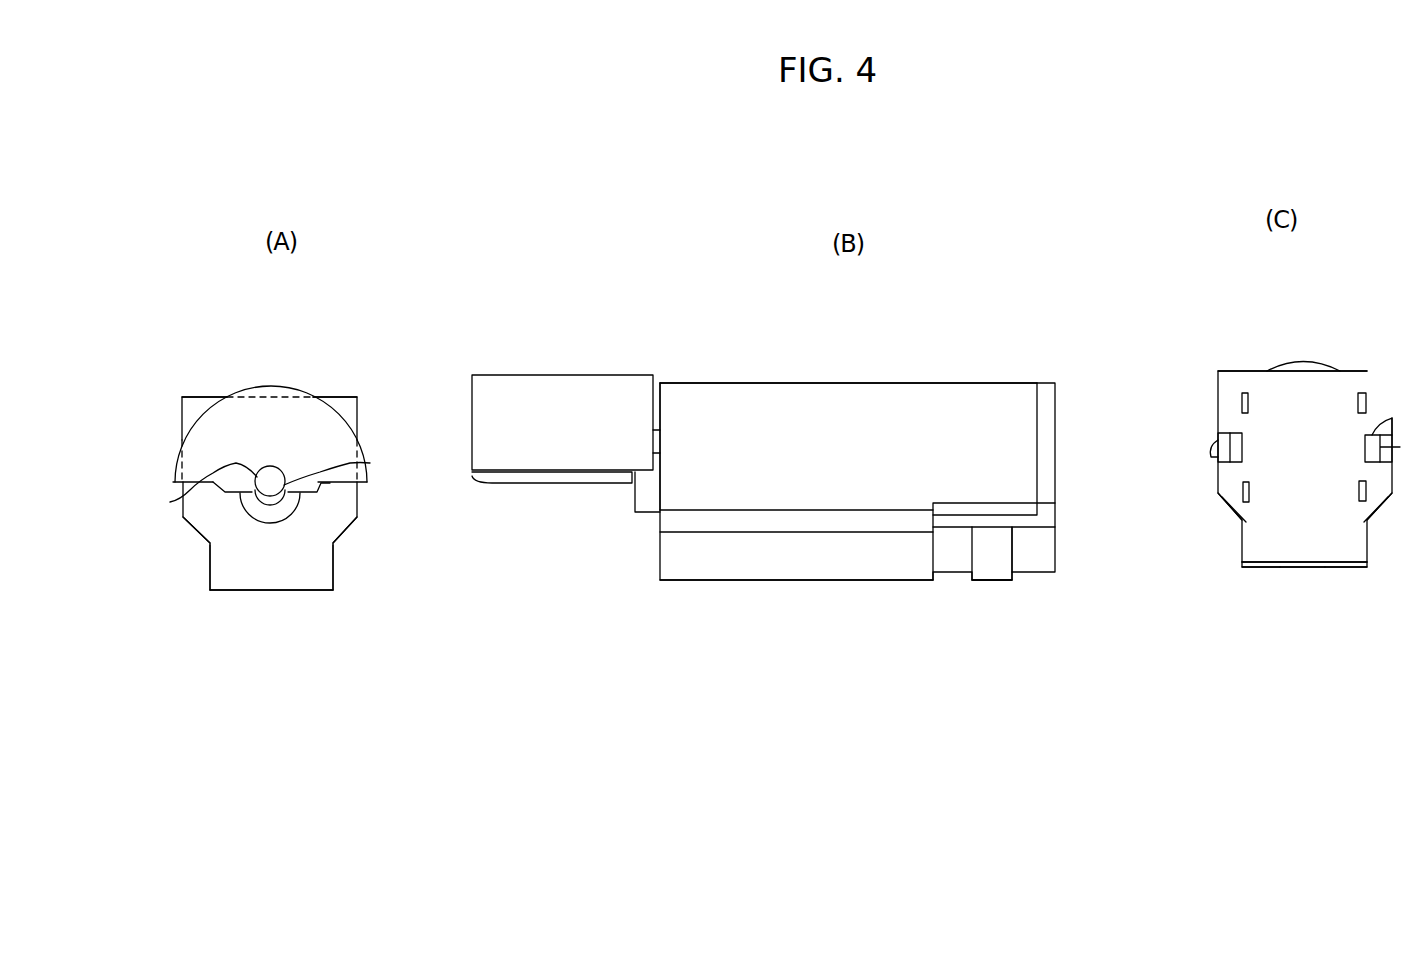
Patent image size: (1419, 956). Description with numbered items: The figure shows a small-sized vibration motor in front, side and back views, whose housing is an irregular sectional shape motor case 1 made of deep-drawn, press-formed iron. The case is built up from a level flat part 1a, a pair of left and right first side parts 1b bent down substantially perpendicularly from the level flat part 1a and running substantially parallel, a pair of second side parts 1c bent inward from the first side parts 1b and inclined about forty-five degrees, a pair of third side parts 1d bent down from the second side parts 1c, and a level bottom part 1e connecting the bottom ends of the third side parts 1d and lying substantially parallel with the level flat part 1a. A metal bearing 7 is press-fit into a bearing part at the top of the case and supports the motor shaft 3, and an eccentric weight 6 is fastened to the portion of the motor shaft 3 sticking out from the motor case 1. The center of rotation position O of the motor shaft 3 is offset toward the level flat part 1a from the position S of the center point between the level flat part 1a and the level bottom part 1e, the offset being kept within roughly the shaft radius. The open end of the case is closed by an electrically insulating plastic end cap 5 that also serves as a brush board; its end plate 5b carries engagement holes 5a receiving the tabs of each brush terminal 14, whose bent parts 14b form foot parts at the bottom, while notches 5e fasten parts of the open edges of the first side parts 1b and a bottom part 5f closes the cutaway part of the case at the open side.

The motor case 1 is at (204, 395).
The level flat part 1a is at (328, 394).
The first side parts 1b is at (357, 407).
The second side parts 1c is at (190, 530).
The third side parts 1d is at (208, 582).
The level bottom part 1e is at (275, 593).
The motor shaft 3 is at (183, 497).
The plastic end cap 5 is at (1062, 456).
The engagement holes 5a is at (1312, 362).
The end plate 5b is at (1050, 393).
The notches 5e is at (1240, 432).
The bottom part 5f is at (1048, 548).
The eccentric weight 6 is at (271, 388).
The metal bearing 7 is at (298, 502).
The brush terminal 14 is at (996, 560).
The bent parts 14b is at (985, 580).
The center of rotation position O is at (272, 481).
The position of the center point S is at (370, 463).